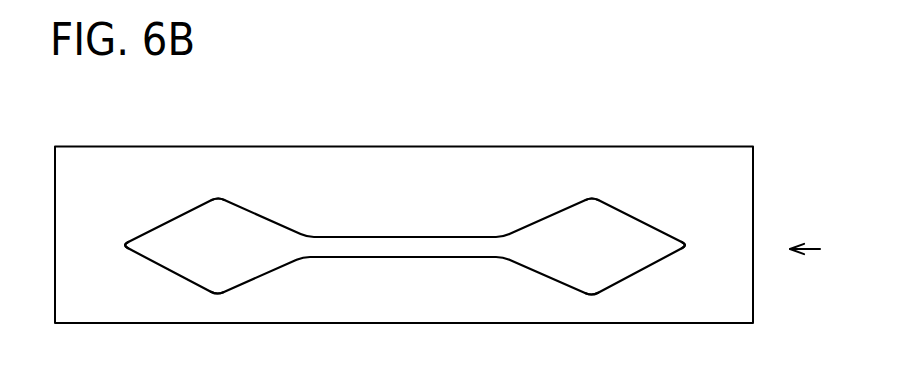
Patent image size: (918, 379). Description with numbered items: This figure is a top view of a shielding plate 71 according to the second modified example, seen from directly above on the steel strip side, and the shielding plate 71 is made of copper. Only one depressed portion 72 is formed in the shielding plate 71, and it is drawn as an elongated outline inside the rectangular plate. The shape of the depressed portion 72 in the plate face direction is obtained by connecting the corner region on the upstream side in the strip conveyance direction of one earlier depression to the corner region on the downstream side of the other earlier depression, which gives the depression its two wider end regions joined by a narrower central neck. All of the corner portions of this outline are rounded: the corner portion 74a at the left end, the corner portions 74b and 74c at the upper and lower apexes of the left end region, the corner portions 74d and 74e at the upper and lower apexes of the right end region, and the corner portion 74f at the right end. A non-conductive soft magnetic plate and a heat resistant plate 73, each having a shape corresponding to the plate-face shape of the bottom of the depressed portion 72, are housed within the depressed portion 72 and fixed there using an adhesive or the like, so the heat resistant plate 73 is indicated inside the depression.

The shielding plate 71 is at (404, 162).
The depressed portion 72 is at (271, 206).
The heat resistant plate 73 is at (192, 245).
The corner portion 74a is at (121, 243).
The corner portion 74b is at (218, 194).
The corner portion 74c is at (227, 298).
The corner portion 74d is at (588, 195).
The corner portion 74e is at (600, 298).
The corner portion 74f is at (690, 247).